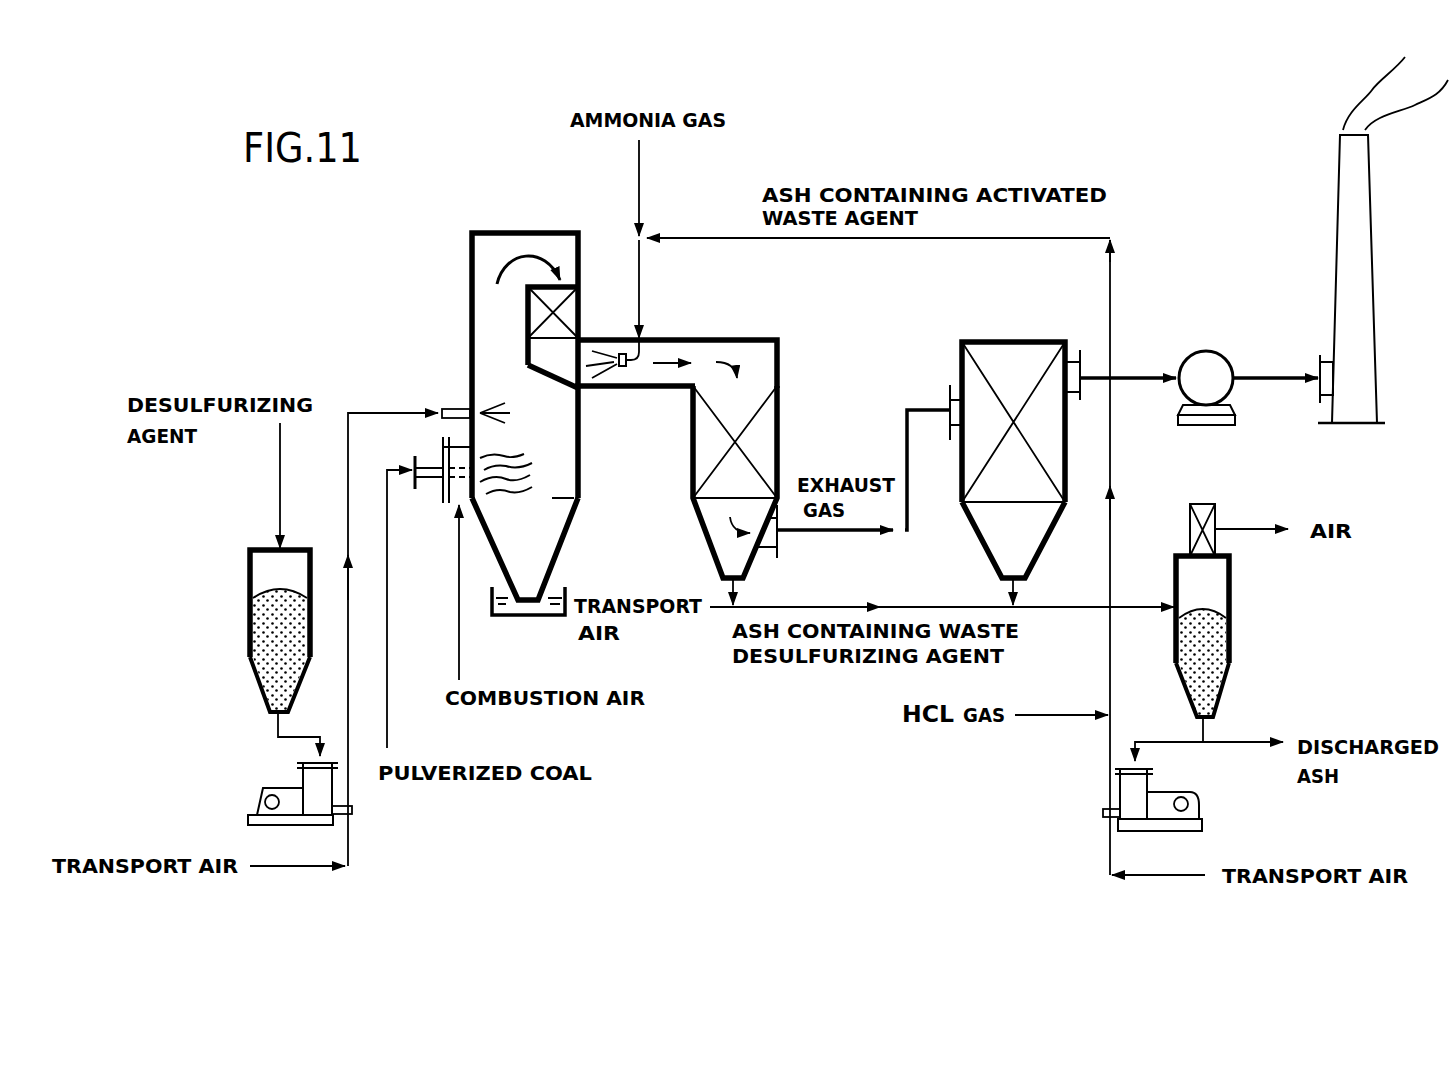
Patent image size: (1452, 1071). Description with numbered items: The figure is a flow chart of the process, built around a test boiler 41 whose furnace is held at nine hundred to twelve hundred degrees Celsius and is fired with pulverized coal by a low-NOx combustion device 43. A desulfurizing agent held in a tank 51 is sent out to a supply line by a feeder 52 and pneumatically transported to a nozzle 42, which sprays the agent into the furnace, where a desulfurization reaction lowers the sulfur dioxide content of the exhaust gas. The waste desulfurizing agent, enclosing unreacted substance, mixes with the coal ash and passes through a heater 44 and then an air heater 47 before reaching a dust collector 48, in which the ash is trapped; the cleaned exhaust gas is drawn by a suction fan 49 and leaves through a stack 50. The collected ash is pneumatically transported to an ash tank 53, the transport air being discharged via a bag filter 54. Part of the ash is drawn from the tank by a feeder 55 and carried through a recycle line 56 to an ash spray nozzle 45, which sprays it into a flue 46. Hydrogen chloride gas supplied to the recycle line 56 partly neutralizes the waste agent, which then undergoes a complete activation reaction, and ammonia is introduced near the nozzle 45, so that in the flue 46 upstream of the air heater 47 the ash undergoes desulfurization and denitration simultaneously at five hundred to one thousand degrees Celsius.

The test boiler 41 is at (472, 276).
The nozzle 42 is at (442, 407).
The low-NOx combustion device 43 is at (447, 505).
The heater 44 is at (568, 312).
The ash spray nozzle 45 is at (623, 367).
The flue 46 is at (722, 338).
The air heater 47 is at (778, 443).
The dust collector 48 is at (960, 354).
The suction fan 49 is at (1207, 362).
The stack 50 is at (1362, 258).
The tank 51 is at (250, 580).
The feeder 52 is at (262, 788).
The ash tank 53 is at (1229, 594).
The bag filter 54 is at (1215, 514).
The feeder 55 is at (1200, 798).
The recycle line 56 is at (1110, 457).